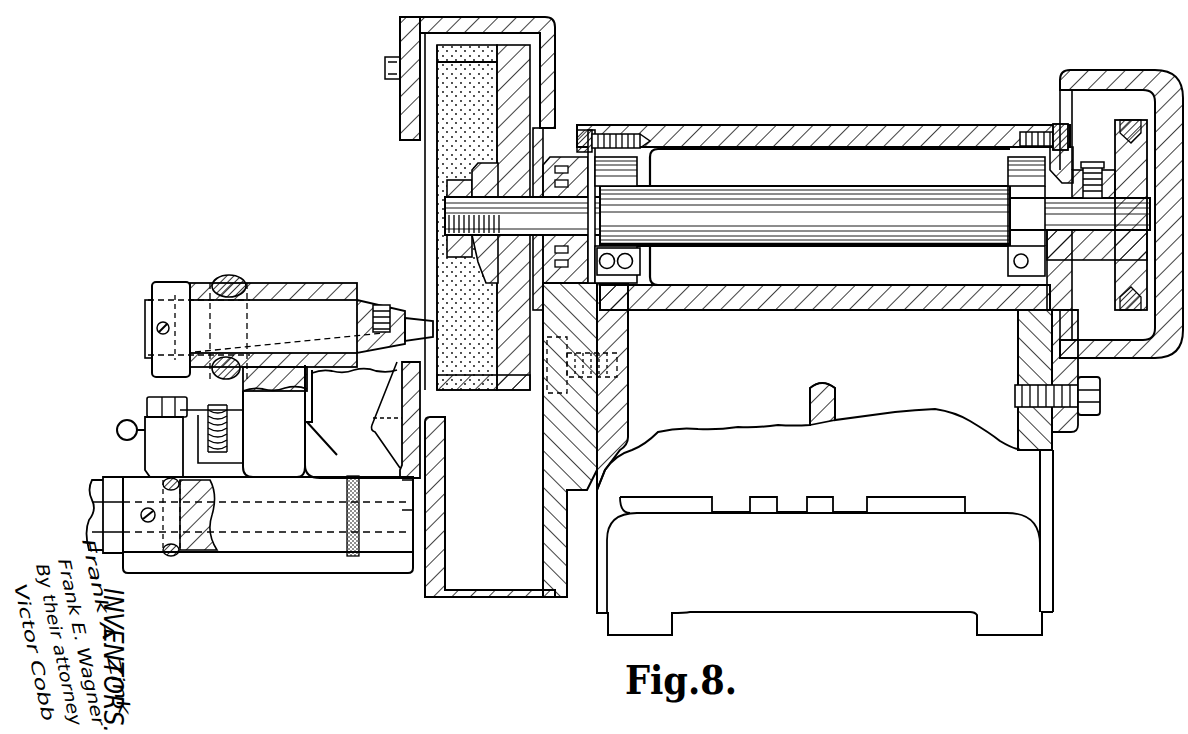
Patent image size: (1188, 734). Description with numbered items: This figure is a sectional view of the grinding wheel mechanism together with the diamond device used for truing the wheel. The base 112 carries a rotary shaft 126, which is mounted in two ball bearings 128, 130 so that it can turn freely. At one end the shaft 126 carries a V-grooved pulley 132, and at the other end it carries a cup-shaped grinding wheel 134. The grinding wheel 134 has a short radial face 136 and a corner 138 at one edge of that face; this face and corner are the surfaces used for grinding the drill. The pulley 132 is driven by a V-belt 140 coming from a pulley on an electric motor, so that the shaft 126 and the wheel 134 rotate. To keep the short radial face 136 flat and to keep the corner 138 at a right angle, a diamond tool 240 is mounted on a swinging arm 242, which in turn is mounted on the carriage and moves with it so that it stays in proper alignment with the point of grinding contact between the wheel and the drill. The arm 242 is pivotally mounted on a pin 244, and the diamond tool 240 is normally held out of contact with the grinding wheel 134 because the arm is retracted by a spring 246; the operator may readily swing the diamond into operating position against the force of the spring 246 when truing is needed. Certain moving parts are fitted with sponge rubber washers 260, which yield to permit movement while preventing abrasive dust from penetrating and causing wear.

The base 112 is at (897, 602).
The rotary shaft 126 is at (790, 184).
The ball bearing 128 is at (641, 262).
The ball bearing 130 is at (1009, 259).
The V-grooved pulley 132 is at (1123, 157).
The cup-shaped grinding wheel 134 is at (500, 130).
The short radial face 136 is at (435, 58).
The corner 138 is at (436, 63).
The V-belt 140 is at (1127, 114).
The diamond tool 240 is at (434, 327).
The swinging arm 242 is at (298, 408).
The pin 244 is at (376, 512).
The spring 246 is at (217, 403).
The sponge rubber washer 260 is at (228, 278).